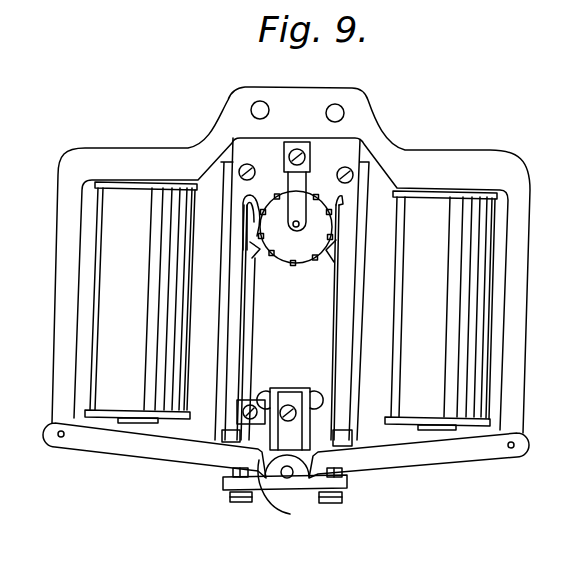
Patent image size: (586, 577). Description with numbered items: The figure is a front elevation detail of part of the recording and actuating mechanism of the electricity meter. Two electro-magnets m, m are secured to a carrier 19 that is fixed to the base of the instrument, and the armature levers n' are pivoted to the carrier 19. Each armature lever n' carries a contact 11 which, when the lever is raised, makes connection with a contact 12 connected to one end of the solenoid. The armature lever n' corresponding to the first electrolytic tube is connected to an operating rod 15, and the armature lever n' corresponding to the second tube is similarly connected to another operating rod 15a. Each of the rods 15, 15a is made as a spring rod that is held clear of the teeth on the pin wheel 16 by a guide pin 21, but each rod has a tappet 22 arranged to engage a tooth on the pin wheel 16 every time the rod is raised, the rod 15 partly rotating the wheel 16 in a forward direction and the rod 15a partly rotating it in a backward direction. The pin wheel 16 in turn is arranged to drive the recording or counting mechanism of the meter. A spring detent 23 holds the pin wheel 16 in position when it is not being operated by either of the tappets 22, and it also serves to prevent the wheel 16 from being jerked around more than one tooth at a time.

The contacts 11 is at (312, 475).
The contacts 12 is at (228, 436).
The operating rod 15 is at (259, 331).
The operating rod 15a is at (331, 358).
The pin wheel 16 is at (298, 202).
The carrier 19 is at (110, 158).
The guide pin 21 is at (330, 263).
The tappet 22 is at (251, 248).
The spring detent 23 is at (246, 226).
The electro-magnet m is at (291, 306).
The armature lever n' is at (286, 464).